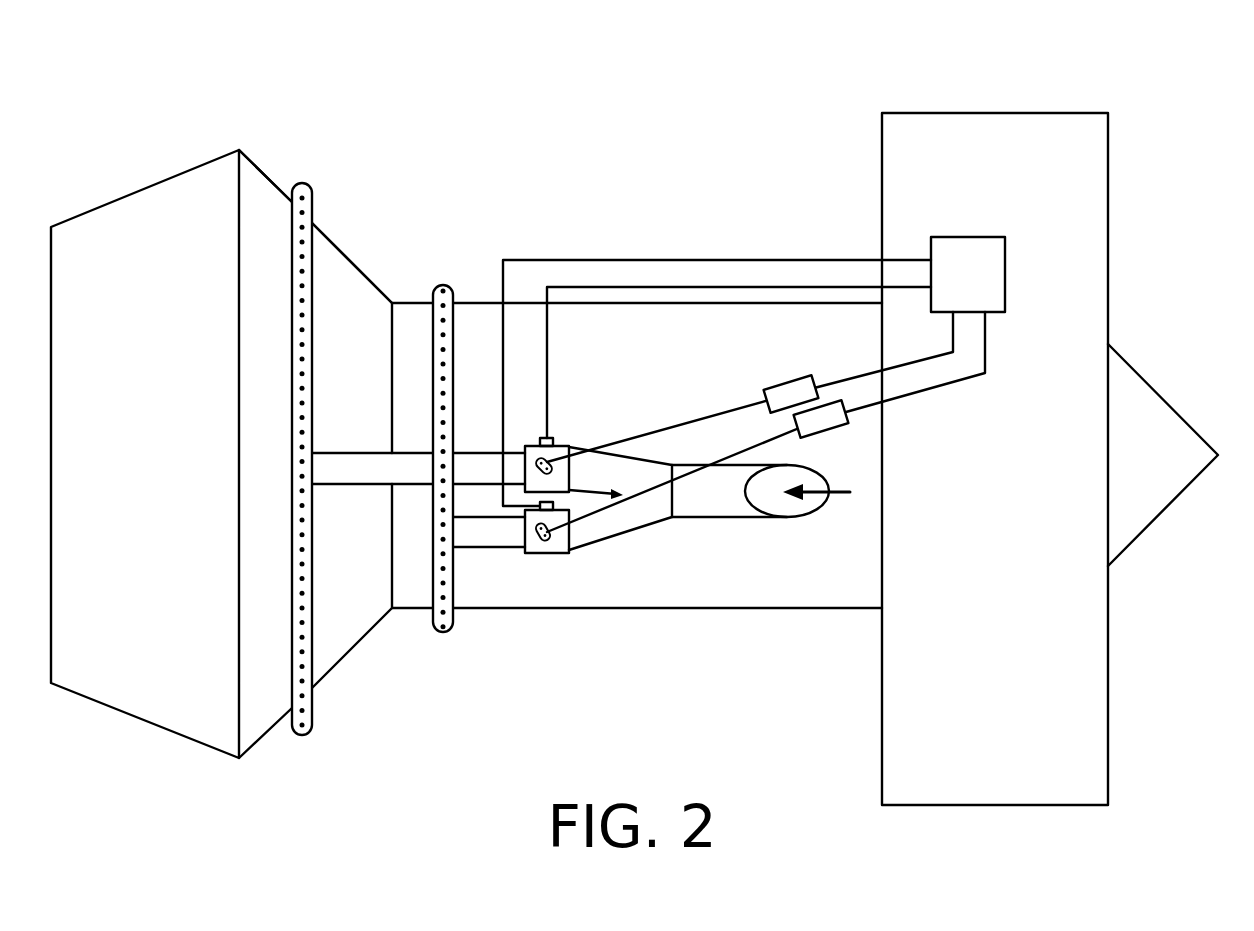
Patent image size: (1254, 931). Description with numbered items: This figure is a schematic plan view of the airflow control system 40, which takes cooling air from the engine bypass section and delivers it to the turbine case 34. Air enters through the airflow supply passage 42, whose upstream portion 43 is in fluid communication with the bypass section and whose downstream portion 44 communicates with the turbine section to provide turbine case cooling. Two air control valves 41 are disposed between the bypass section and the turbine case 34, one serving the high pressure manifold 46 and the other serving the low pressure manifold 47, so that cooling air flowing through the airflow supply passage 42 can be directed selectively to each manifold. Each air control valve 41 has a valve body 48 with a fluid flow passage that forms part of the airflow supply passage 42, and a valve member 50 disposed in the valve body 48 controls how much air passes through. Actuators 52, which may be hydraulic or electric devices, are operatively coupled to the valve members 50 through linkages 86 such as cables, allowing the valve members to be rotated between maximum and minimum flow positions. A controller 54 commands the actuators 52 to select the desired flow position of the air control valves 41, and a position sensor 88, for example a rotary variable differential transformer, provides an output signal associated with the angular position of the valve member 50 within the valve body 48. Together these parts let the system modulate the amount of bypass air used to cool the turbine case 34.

The airflow control system 40 is at (392, 82).
The turbine case 34 is at (352, 273).
The downstream portion 44 is at (374, 522).
The low pressure manifold 47 is at (302, 182).
The high pressure manifold 46 is at (443, 284).
The controller 54 is at (1007, 272).
The position sensor 88 is at (553, 440).
The valve body 48 is at (540, 553).
The valve member 50 is at (550, 538).
The air control valve 41 is at (578, 473).
The airflow supply passage 42 is at (705, 497).
The upstream portion 43 is at (759, 542).
The linkages 86 is at (760, 443).
The actuator 52 is at (838, 387).